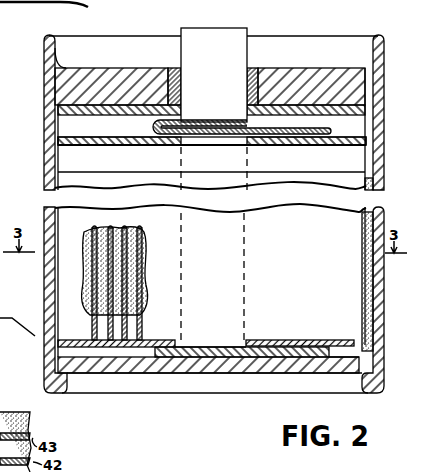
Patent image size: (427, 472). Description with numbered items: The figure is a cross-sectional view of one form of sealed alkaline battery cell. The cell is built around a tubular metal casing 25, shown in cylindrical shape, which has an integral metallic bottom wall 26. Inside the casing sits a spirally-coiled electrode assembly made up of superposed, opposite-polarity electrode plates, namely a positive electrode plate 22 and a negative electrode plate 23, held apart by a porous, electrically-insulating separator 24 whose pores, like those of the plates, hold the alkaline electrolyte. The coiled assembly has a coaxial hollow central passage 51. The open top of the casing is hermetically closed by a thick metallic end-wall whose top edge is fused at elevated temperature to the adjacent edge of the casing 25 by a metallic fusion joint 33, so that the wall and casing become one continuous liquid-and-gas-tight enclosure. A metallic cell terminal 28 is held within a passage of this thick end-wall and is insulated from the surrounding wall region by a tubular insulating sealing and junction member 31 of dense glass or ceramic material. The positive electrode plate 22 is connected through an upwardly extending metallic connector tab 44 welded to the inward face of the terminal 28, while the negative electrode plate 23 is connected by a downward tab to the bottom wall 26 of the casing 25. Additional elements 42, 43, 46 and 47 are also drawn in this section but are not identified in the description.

The positive electrode plate 22 is at (101, 252).
The negative electrode plate 23 is at (147, 256).
The separator 24 is at (98, 226).
The tubular cell casing 25 is at (45, 130).
The bottom wall 26 is at (244, 364).
The cell terminal 28 is at (236, 11).
The insulating sealing and junction member 31 is at (268, 53).
The metallic fusion joint 33 is at (53, 34).
The separator / electrode layer 42 is at (142, 286).
The separator / electrode layer 43 is at (143, 272).
The positive terminal tab 44 is at (320, 137).
The insulating band 46 is at (98, 142).
The insulating band 47 is at (342, 104).
The hollow central passage 51 is at (245, 166).